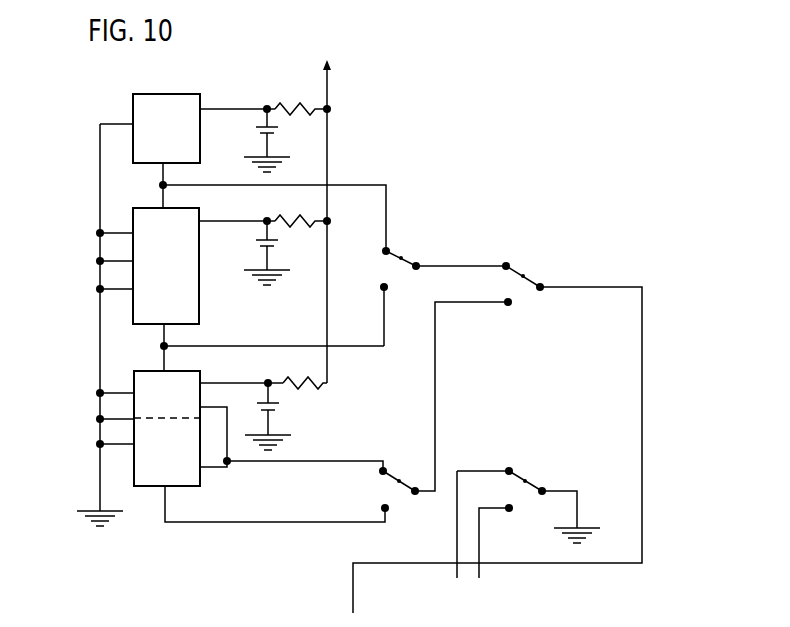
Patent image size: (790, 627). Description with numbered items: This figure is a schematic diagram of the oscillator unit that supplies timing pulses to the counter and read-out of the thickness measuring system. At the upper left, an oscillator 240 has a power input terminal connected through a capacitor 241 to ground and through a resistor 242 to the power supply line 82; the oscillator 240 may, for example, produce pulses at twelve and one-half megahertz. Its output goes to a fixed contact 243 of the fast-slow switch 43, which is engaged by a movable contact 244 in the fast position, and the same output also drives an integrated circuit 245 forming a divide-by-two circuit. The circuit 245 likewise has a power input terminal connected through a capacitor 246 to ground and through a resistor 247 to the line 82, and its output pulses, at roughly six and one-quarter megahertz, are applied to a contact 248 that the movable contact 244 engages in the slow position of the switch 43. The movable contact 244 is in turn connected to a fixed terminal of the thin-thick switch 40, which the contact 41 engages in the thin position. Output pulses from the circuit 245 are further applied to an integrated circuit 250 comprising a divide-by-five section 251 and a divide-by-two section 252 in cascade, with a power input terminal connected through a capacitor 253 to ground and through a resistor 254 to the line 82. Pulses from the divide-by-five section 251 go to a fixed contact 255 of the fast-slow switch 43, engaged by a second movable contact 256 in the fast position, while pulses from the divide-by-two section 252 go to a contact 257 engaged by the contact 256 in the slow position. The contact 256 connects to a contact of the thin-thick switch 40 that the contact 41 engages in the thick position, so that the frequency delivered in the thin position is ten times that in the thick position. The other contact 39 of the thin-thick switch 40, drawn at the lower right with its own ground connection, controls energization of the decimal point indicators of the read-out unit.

The oscillator 240 is at (160, 98).
The capacitor 241 is at (260, 130).
The resistor 242 is at (280, 103).
The power supply line 82 is at (329, 80).
The integrated circuit 245 is at (200, 298).
The capacitor 246 is at (262, 244).
The resistor 247 is at (286, 216).
The fixed contact 243 is at (383, 252).
The movable contact 244 is at (406, 262).
The fast-slow switch 43 is at (423, 231).
The contact 248 is at (382, 289).
The thin-thick switch 40 is at (533, 258).
The contact 41 is at (538, 290).
The integrated circuit 250 is at (118, 418).
The divide-by-five section 251 is at (140, 410).
The divide-by-two section 252 is at (140, 463).
The capacitor 253 is at (276, 405).
The resistor 254 is at (290, 378).
The fixed contact 255 is at (380, 472).
The movable contact 256 is at (405, 482).
The contact 257 is at (382, 508).
The contact 39 is at (532, 483).